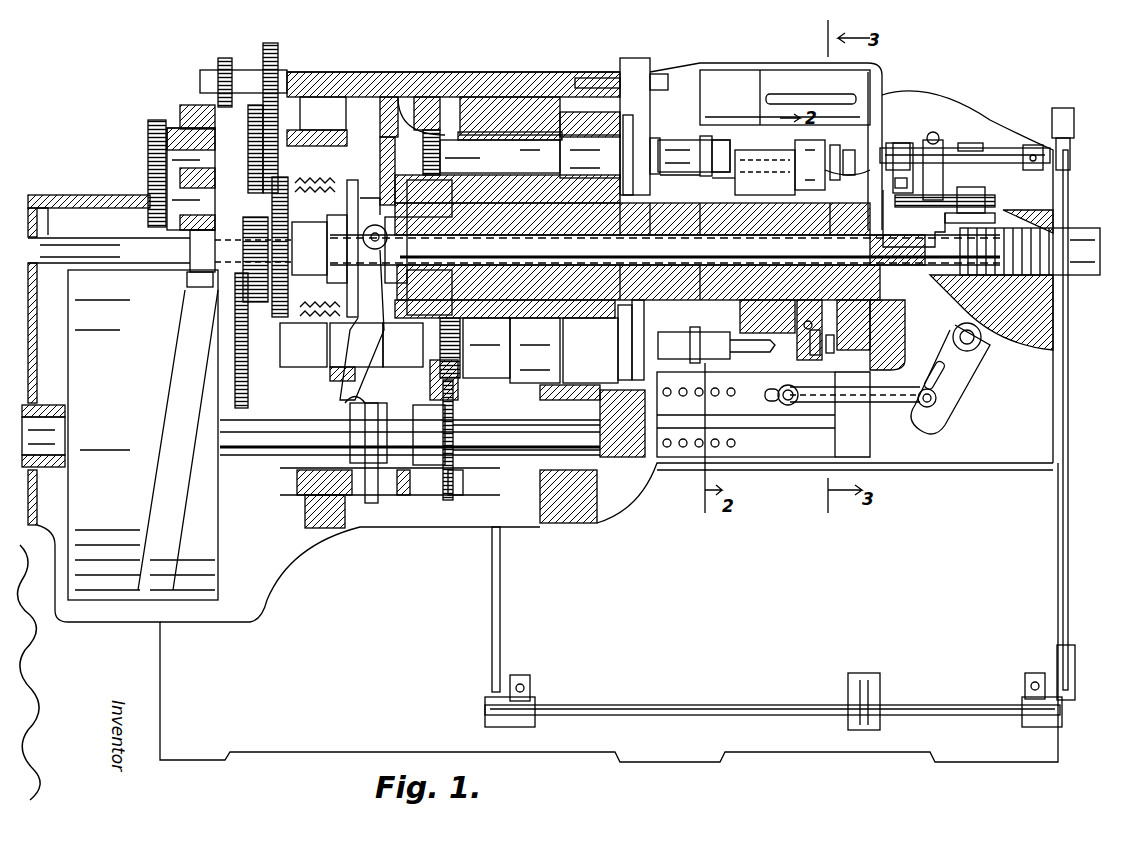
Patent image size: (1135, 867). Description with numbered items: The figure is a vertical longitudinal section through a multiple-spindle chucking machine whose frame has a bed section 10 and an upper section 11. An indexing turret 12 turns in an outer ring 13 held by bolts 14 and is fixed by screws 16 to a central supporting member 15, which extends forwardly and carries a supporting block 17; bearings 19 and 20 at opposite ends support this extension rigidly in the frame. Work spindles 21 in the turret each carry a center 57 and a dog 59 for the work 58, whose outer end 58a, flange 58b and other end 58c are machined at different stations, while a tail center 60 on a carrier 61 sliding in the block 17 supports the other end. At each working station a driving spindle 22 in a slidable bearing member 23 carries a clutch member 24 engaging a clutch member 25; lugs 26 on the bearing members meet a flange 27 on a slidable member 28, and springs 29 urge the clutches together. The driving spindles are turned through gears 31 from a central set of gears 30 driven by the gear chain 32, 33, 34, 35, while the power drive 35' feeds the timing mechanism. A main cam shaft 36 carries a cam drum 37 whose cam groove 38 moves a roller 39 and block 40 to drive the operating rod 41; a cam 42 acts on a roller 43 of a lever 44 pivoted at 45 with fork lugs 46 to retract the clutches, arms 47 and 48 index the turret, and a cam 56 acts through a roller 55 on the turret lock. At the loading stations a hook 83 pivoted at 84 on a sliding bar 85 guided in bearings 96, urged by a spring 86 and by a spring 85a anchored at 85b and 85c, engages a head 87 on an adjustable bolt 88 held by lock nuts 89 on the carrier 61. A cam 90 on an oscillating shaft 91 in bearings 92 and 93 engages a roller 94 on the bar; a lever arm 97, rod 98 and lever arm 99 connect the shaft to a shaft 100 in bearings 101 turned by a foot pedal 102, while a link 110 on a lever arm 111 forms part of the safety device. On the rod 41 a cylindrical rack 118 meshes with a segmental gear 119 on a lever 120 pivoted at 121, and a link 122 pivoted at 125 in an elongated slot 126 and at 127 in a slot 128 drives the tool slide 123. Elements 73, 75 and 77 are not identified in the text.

The bed section 10 is at (543, 412).
The upper section 11 is at (478, 72).
The indexing turret 12 is at (535, 98).
The outer ring 13 is at (628, 72).
The bolts 14 is at (655, 78).
The central supporting member 15 is at (670, 230).
The screws 16 is at (632, 210).
The supporting block 17 is at (740, 300).
The bearing 19 is at (480, 264).
The bearing 20 is at (890, 312).
The work spindles 21 is at (530, 156).
The driving spindle 22 is at (345, 125).
The bearing member 23 is at (372, 249).
The clutch member 24 is at (430, 115).
The clutch member 25 is at (445, 128).
The lugs 26 is at (340, 200).
The flange 27 is at (334, 249).
The longitudinally slidable member 28 is at (326, 258).
The springs 29 is at (317, 270).
The central set of gears 30 is at (258, 305).
The individual gears 31 is at (249, 392).
The gear 32 is at (270, 202).
The gear 33 is at (147, 178).
The gear 34 is at (250, 130).
The gear 35 is at (259, 115).
The power drive 35' is at (233, 69).
The main cam shaft 36 is at (275, 455).
The main cam drum 37 is at (143, 435).
The cam groove 38 is at (170, 395).
The roller 39 is at (185, 285).
The block 40 is at (190, 248).
The operating rod 41 is at (105, 248).
The cam 42 is at (368, 503).
The roller 43 is at (348, 420).
The lever 44 is at (365, 318).
The pivot 45 is at (386, 242).
The lugs 46 is at (360, 290).
The arm 47 is at (455, 338).
The arm 48 is at (445, 405).
The roller 55 is at (455, 440).
The cam 56 is at (458, 483).
The centers 57 is at (596, 340).
The work 58 is at (715, 138).
The outer end of work 58a is at (612, 356).
The flange of work 58b is at (696, 205).
The other end of work 58c is at (684, 186).
The dog 59 is at (660, 138).
The tail center 60 is at (742, 160).
The carrier 61 is at (700, 343).
The plate 73 is at (755, 70).
The cover 75 is at (728, 58).
The slot 77 is at (790, 95).
The hook 83 is at (810, 168).
The pivot 84 is at (860, 155).
The sliding bar 85 is at (848, 160).
The spring 85a is at (916, 250).
The spring attachment 85b is at (914, 218).
The spring attachment 85c is at (995, 208).
The spring 86 is at (837, 169).
The head 87 is at (882, 98).
The adjustable bolt 88 is at (811, 330).
The lock nuts 89 is at (815, 330).
The cam 90 is at (925, 180).
The oscillating shaft 91 is at (992, 148).
The bearing 92 is at (912, 148).
The bearing 93 is at (1032, 145).
The roller 94 is at (955, 192).
The bearings 96 is at (972, 143).
The lever arm 97 is at (1066, 110).
The rod 98 is at (1068, 396).
The lever arm 99 is at (1075, 680).
The shaft 100 is at (738, 706).
The bearings 101 is at (515, 728).
The foot pedal 102 is at (872, 672).
The link 110 is at (492, 605).
The lever arm 111 is at (500, 680).
The cylindrical rack 118 is at (1035, 252).
The segmental gear 119 is at (1005, 300).
The lever 120 is at (958, 385).
The pivot 121 is at (968, 330).
The link 122 is at (895, 410).
The tool slide 123 is at (748, 460).
The pivot 125 is at (935, 405).
The elongated slot 126 is at (932, 380).
The pivot 127 is at (790, 405).
The elongated slot 128 is at (772, 405).